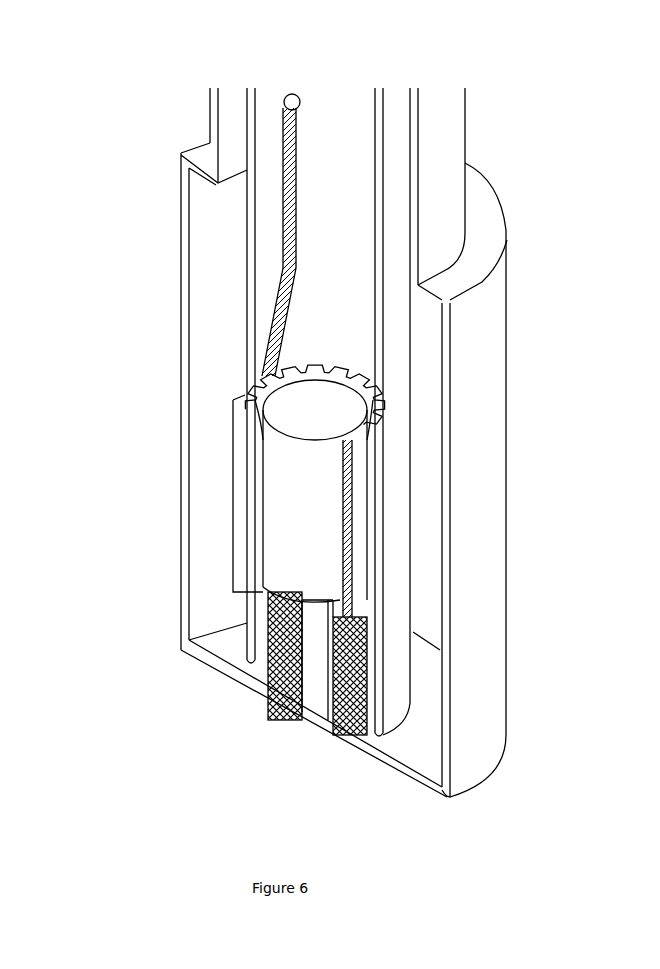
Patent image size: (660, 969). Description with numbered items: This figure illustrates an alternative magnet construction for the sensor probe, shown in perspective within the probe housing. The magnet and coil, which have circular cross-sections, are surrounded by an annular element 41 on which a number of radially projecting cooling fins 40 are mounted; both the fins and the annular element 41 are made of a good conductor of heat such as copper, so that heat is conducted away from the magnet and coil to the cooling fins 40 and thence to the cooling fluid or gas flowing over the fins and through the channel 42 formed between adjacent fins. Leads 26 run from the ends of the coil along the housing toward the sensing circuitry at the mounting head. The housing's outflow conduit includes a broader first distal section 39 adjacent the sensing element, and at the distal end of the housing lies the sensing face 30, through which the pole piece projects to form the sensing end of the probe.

The leads 26 is at (295, 94).
The sensing face 30 is at (405, 785).
The first distal section 39 is at (185, 270).
The cooling fins 40 is at (242, 405).
The annular element 41 is at (340, 381).
The channel 42 is at (298, 360).